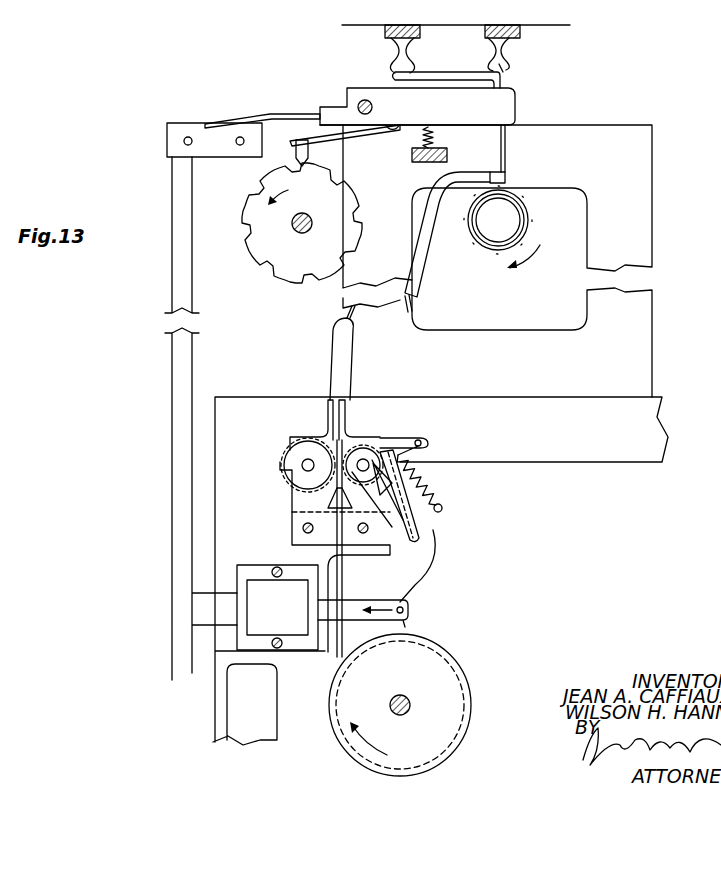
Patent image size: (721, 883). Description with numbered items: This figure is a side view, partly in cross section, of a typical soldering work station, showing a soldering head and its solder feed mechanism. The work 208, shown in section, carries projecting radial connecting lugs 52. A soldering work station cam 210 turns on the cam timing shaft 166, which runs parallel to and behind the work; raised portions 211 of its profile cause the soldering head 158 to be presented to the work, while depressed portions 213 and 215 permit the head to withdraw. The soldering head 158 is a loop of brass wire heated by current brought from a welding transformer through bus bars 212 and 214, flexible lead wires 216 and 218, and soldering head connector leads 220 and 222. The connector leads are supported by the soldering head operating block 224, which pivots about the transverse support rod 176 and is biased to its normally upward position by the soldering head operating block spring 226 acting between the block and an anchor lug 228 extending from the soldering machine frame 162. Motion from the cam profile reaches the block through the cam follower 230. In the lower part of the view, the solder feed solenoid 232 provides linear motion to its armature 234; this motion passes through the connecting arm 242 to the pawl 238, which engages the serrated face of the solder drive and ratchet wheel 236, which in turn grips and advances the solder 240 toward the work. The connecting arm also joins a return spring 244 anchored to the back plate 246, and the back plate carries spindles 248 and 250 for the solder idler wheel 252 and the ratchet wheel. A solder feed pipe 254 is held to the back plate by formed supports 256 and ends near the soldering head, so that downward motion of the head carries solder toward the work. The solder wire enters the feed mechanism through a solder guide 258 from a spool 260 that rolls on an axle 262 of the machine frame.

The connecting lug 52 is at (525, 214).
The soldering head 158 is at (506, 150).
The soldering machine frame 162 is at (585, 135).
The cam timing shaft 166 is at (297, 230).
The support rod 176 is at (365, 100).
The work 208 is at (474, 232).
The soldering work station cam 210 is at (323, 203).
The raised portions 211 is at (240, 232).
The depressed portion 213 is at (307, 283).
The depressed portion 215 is at (267, 176).
The bus bar 212 is at (407, 25).
The bus bar 214 is at (508, 25).
The flexible lead wire 216 is at (390, 54).
The flexible lead wire 218 is at (502, 54).
The soldering head connector lead 220 is at (477, 75).
The soldering head connector lead 222 is at (505, 71).
The soldering head operating block 224 is at (438, 118).
The soldering head operating block spring 226 is at (433, 135).
The anchor lug 228 is at (412, 155).
The cam follower 230 is at (301, 140).
The solder feed solenoid 232 is at (290, 611).
The armature 234 is at (389, 601).
The solder drive and ratchet wheel 236 is at (192, 673).
The pawl 238 is at (200, 130).
The solder 240 is at (292, 113).
The connecting arm 242 is at (442, 508).
The return spring 244 is at (437, 479).
The back plate 246 is at (293, 500).
The spindle 248 is at (306, 462).
The spindle 250 is at (364, 458).
The solder idler wheel 252 is at (307, 440).
The solder feed pipe 254 is at (448, 183).
The formed supports 256 is at (330, 400).
The solder guide 258 is at (335, 496).
The spool 260 is at (415, 683).
The axle 262 is at (412, 705).